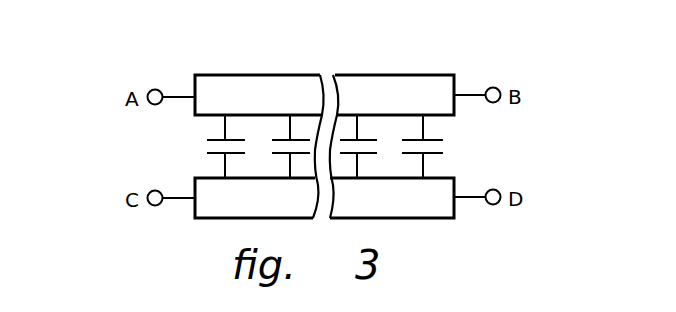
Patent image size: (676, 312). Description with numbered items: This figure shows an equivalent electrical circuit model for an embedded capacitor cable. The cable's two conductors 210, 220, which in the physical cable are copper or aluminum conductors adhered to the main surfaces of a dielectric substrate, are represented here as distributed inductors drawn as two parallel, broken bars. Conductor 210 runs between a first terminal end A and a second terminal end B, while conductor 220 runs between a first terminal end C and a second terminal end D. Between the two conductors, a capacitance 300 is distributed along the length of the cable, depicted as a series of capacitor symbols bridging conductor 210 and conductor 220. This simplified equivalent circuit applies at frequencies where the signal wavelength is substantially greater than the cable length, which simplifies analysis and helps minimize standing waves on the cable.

The conductor 210 is at (426, 75).
The conductor 220 is at (430, 219).
The capacitance 300 is at (276, 154).